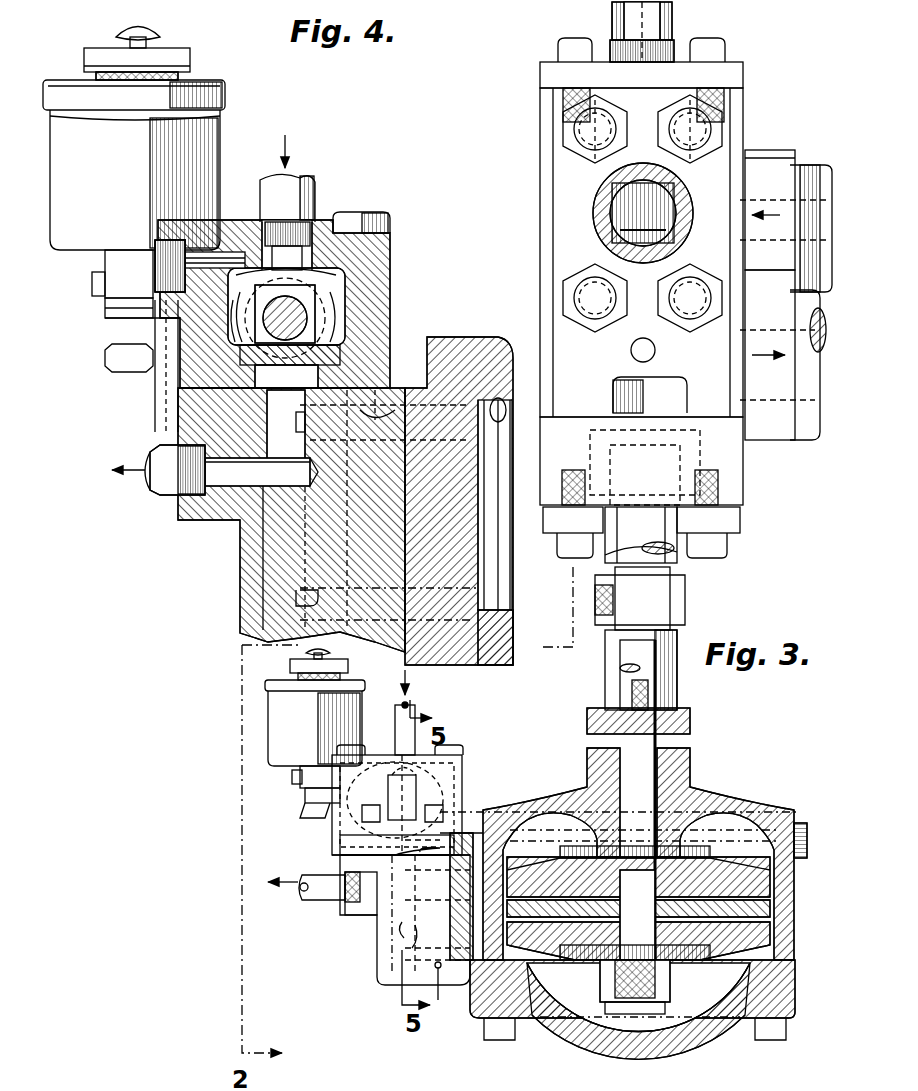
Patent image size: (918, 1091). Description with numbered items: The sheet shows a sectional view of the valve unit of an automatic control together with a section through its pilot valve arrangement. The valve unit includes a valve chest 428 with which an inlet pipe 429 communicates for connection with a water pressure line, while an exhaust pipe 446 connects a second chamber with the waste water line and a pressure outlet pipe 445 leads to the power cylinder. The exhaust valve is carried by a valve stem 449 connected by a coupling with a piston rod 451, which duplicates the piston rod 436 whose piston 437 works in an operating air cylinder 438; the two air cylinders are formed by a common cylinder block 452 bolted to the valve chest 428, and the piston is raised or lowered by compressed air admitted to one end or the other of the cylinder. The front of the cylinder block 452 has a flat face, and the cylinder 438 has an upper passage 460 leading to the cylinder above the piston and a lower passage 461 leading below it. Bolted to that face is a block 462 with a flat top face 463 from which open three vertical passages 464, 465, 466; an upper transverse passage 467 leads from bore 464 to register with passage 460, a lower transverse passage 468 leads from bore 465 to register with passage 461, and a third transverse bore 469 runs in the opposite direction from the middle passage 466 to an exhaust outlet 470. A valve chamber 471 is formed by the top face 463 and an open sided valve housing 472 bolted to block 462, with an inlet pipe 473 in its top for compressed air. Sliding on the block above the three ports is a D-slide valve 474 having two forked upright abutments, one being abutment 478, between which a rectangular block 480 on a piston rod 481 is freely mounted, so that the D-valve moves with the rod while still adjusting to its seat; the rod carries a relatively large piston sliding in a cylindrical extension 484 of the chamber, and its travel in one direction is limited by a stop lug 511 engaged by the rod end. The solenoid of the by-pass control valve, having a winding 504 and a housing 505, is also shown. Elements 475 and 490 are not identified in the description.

In FIG. 3, the valve chest 428 is at (743, 495).
In FIG. 3, the inlet pipe 429 is at (818, 180).
In FIG. 3, the piston rod 436 is at (625, 680).
In FIG. 3, the piston 437 is at (785, 926).
In FIG. 3, the operating air cylinder 438 is at (785, 898).
In FIG. 3, the pressure outlet pipe 445 is at (595, 200).
In FIG. 3, the exhaust pipe 446 is at (810, 422).
In FIG. 3, the valve stem 449 is at (675, 46).
In FIG. 3, the piston rod 451 is at (625, 648).
In FIG. 3, the common cylinder block 452 is at (482, 990).
In FIG. 4, the upper passage 460 is at (500, 348).
In FIG. 3, the upper passage 460 is at (535, 838).
In FIG. 4, the lower passage 461 is at (450, 612).
In FIG. 3, the lower passage 461 is at (500, 990).
In FIG. 4, the block 462 is at (240, 612).
In FIG. 3, the block 462 is at (375, 955).
In FIG. 4, the flat top face 463 is at (386, 316).
In FIG. 3, the flat top face 463 is at (460, 805).
In FIG. 4, the vertical bore 464 is at (265, 548).
In FIG. 3, the vertical bore 465 is at (392, 928).
In FIG. 4, the vertical bore 466 is at (285, 405).
In FIG. 4, the upper transverse passage 467 is at (398, 390).
In FIG. 3, the upper transverse passage 467 is at (398, 853).
In FIG. 4, the lower transverse passage 468 is at (280, 582).
In FIG. 3, the lower transverse passage 468 is at (442, 983).
In FIG. 4, the third transverse bore 469 is at (237, 476).
In FIG. 3, the third transverse bore 469 is at (362, 900).
In FIG. 4, the exhaust pipe 470 is at (150, 498).
In FIG. 3, the exhaust pipe 470 is at (315, 896).
In FIG. 4, the valve chamber 471 is at (340, 290).
In FIG. 4, the valve housing 472 is at (155, 335).
In FIG. 3, the valve housing 472 is at (455, 772).
In FIG. 4, the inlet pipe 473 is at (312, 190).
In FIG. 3, the inlet pipe 473 is at (415, 707).
In FIG. 4, the D-slide valve 474 is at (195, 380).
In FIG. 4, the cross head 475 is at (290, 366).
In FIG. 4, the forked upright abutment 478 is at (386, 243).
In FIG. 4, the rectangular block 480 is at (305, 282).
In FIG. 4, the piston rod 481 is at (300, 318).
In FIG. 4, the cylindrical extension 484 is at (300, 296).
In FIG. 4, the cavity 490 is at (247, 305).
In FIG. 4, the winding 504 is at (180, 78).
In FIG. 4, the housing 505 is at (134, 139).
In FIG. 3, the housing 505 is at (315, 707).
In FIG. 3, the stop lug 511 is at (395, 793).